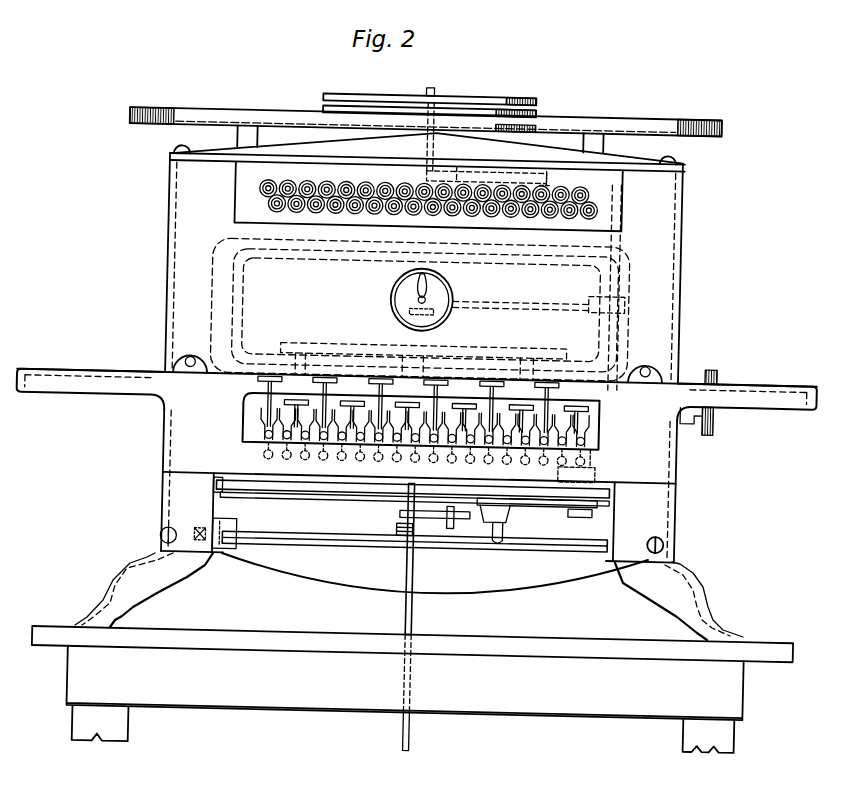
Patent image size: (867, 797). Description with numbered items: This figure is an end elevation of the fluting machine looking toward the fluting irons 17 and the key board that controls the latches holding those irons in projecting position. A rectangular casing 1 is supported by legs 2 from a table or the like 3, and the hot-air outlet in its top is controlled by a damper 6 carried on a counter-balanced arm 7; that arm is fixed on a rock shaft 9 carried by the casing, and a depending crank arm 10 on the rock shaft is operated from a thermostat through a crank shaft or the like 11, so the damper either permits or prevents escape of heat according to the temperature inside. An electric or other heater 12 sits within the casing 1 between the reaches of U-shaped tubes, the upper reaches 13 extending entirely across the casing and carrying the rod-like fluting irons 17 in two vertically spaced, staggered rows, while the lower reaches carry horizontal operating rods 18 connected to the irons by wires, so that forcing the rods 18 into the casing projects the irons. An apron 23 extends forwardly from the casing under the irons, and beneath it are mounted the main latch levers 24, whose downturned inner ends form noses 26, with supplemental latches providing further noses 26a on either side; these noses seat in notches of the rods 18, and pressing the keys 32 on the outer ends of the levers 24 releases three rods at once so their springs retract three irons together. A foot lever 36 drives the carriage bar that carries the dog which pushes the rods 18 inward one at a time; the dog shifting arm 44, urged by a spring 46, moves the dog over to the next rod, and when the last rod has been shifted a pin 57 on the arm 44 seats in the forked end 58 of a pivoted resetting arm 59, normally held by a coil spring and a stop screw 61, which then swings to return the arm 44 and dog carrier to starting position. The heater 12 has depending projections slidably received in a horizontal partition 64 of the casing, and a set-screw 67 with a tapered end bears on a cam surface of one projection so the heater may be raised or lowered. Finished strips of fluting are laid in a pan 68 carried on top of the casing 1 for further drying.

The casing 1 is at (190, 222).
The legs 2 is at (138, 575).
The table 3 is at (675, 652).
The damper 6 is at (367, 88).
The counter-balanced arm 7 is at (432, 172).
The rock shaft 9 is at (545, 172).
The crank arm 10 is at (625, 210).
The crank shaft 11 is at (513, 297).
The heater 12 is at (207, 294).
The upper reaches 13 is at (330, 216).
The fluting irons 17 is at (277, 202).
The operating rods 18 is at (252, 453).
The apron 23 is at (132, 359).
The main latch levers 24 is at (248, 392).
The noses 26 is at (407, 438).
The noses 26a is at (353, 432).
The keys 32 is at (474, 402).
The foot lever 36 is at (411, 612).
The dog shifting arm 44 is at (538, 507).
The spring 46 is at (450, 517).
The pin 57 is at (500, 545).
The forked end 58 is at (405, 538).
The resetting arm 59 is at (328, 535).
The stop screw 61 is at (187, 520).
The horizontal partition 64 is at (372, 353).
The set-screw 67 is at (711, 360).
The pan 68 is at (198, 112).